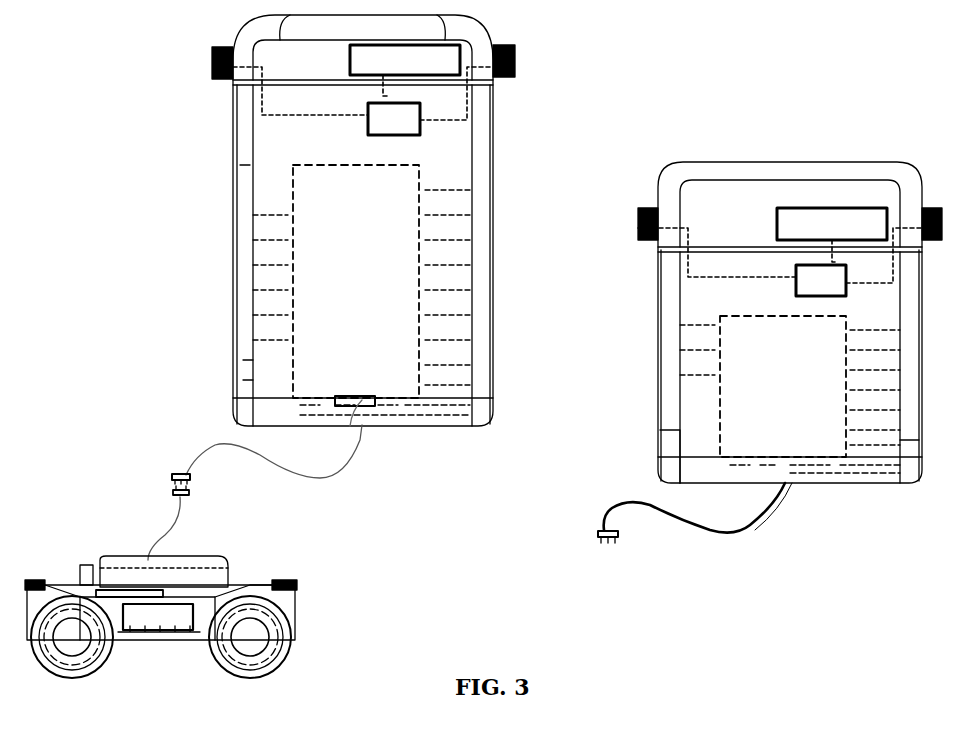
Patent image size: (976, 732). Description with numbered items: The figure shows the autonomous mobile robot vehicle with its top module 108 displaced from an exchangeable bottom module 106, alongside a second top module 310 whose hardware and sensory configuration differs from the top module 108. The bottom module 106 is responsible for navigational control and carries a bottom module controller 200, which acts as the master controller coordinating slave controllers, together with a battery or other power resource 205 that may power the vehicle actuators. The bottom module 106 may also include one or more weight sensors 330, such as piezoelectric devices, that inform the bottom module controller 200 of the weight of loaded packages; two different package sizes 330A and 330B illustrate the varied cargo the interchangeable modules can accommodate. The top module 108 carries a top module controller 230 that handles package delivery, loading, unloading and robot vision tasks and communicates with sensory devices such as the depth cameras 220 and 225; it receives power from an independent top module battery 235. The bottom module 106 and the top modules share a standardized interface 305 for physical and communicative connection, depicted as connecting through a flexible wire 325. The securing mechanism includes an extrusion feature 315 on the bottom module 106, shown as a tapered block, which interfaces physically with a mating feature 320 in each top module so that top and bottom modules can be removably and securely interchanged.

The bottom module 106 is at (297, 614).
The top module 108 is at (232, 375).
The bottom module controller 200 is at (147, 595).
The battery and/or other power resource 205 is at (173, 602).
The depth camera 220 is at (212, 62).
The depth camera 225 is at (515, 60).
The top module controller 230 is at (420, 120).
The top module battery 235 is at (460, 60).
The standardized interface 305 is at (176, 473).
The second top module 310 is at (825, 160).
The extrusion feature 315 is at (222, 563).
The mating feature 320 is at (425, 405).
The flexible wire 325 is at (200, 450).
The weight sensor 330 is at (333, 398).
The package 330A is at (307, 258).
The package 330B is at (722, 380).